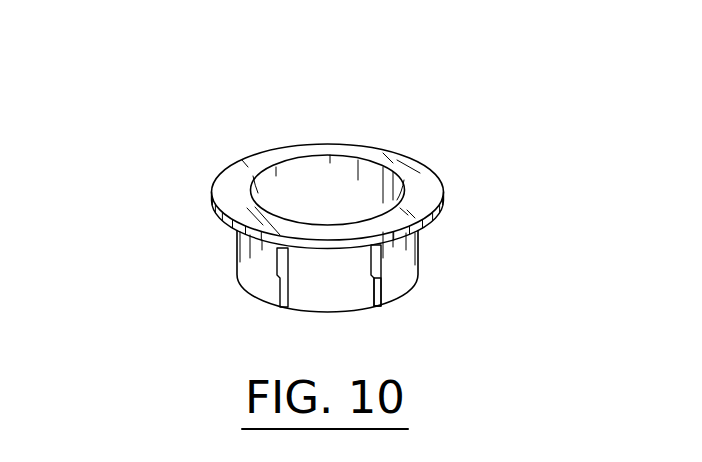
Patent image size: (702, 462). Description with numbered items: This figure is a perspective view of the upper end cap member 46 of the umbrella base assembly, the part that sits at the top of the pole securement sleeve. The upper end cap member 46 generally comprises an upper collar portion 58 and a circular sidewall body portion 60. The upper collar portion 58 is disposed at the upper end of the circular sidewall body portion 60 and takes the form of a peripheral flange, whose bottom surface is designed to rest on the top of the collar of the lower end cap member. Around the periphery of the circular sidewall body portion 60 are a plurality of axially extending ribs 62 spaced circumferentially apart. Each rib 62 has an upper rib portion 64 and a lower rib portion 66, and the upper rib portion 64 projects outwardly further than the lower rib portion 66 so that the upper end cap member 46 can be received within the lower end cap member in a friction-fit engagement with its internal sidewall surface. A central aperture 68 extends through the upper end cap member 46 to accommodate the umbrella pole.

The upper end cap member 46 is at (190, 261).
The upper collar portion 58 is at (423, 175).
The circular sidewall body portion 60 is at (397, 280).
The rib 62 is at (277, 260).
The upper rib portion 64 is at (375, 262).
The lower rib portion 66 is at (373, 297).
The central aperture 68 is at (308, 193).